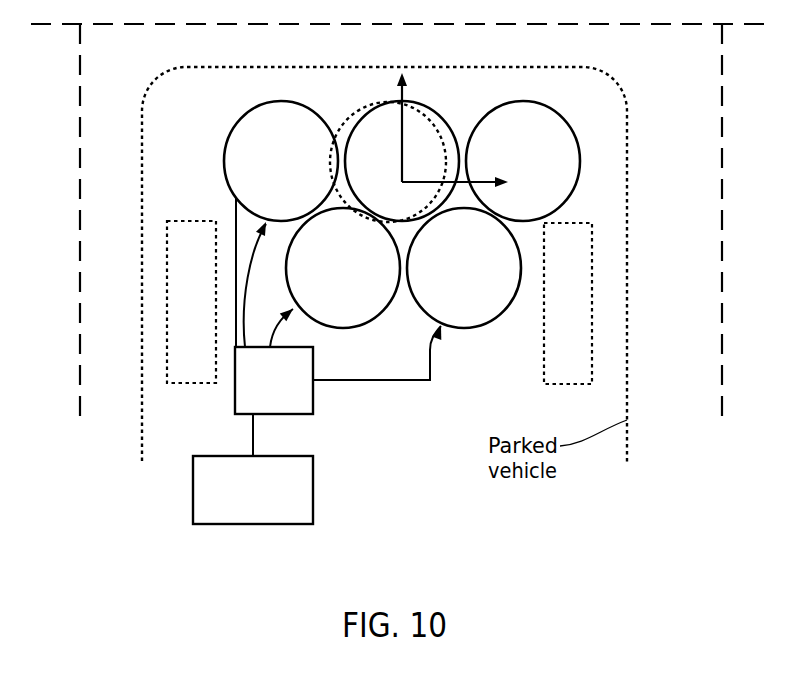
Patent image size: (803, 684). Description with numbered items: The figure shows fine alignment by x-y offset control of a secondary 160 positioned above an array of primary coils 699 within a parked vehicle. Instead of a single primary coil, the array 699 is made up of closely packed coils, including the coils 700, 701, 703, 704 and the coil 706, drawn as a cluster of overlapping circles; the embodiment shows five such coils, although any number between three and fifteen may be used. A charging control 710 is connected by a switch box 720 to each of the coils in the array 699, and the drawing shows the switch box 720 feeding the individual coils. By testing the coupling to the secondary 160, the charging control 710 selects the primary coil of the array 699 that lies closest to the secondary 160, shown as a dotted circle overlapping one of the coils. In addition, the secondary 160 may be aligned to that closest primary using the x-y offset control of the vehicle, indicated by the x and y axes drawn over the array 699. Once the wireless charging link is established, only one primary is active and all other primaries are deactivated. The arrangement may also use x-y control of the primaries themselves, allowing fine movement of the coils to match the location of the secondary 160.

The secondary 160 is at (367, 102).
The array of primary coils 699 is at (400, 226).
The primary coil 700 is at (238, 120).
The primary coil 701 is at (342, 328).
The primary coil 703 is at (414, 101).
The primary coil 704 is at (572, 196).
The primary coil 706 is at (470, 328).
The charging control 710 is at (292, 524).
The switch box 720 is at (288, 414).